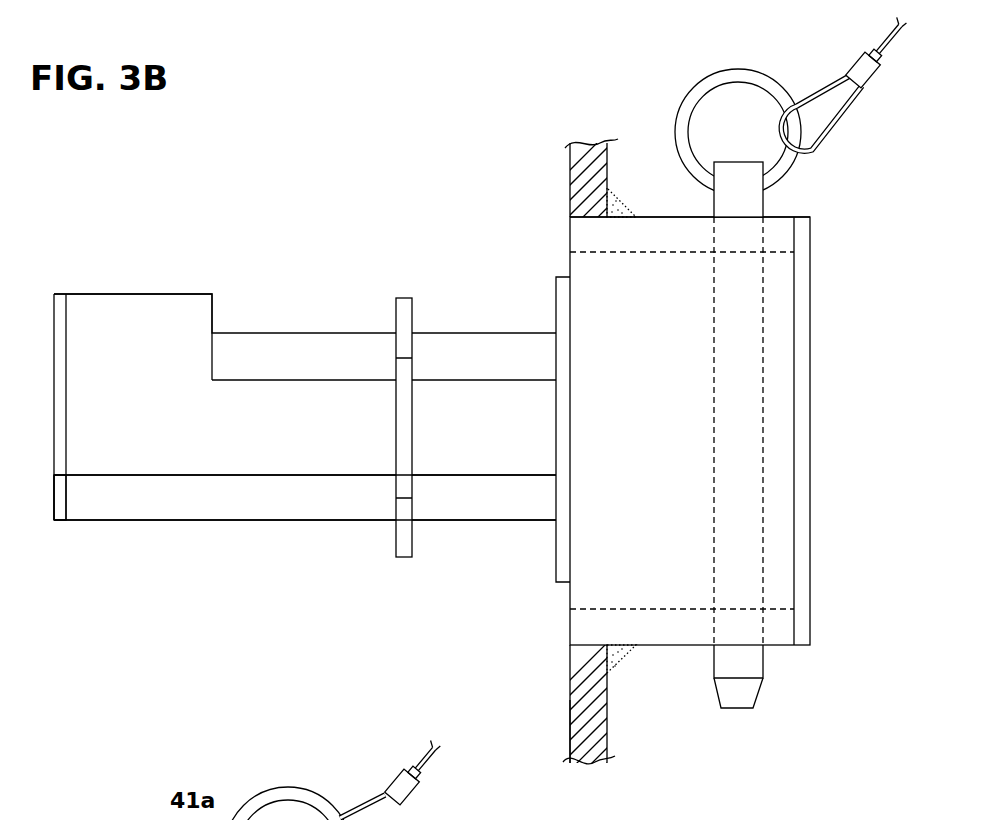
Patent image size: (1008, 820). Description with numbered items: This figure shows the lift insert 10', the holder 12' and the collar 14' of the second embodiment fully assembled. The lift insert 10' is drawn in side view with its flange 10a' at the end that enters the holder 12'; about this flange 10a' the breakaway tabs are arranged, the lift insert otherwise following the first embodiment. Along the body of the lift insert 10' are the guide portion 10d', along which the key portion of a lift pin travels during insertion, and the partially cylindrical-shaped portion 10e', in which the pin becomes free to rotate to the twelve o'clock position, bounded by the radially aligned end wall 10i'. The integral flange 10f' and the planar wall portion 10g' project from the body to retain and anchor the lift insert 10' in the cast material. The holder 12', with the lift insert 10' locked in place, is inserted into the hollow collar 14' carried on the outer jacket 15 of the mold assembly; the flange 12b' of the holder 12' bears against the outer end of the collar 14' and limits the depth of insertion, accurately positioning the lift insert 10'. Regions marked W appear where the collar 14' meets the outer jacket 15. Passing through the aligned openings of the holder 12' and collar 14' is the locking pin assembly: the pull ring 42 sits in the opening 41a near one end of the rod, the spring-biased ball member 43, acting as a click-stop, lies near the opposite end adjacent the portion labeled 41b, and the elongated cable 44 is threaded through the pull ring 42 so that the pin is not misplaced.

The lift insert 10' is at (305, 300).
The flange 10a' is at (515, 371).
The guide portion 10d' is at (305, 529).
The partially cylindrical-shaped portion 10e' is at (133, 259).
The integral flange 10f' is at (361, 408).
The planar wall portion 10g' is at (247, 298).
The radially aligned end wall 10i' is at (91, 539).
The holder 12' is at (731, 431).
The flange 12b' is at (842, 431).
The collar 14' is at (690, 134).
The outer jacket 15 is at (607, 722).
The weld W is at (637, 198).
The opening 41a is at (743, 173).
The lower locking pin 41b is at (740, 696).
The pull ring 42 is at (718, 78).
The spring-biased ball member 43 is at (763, 664).
The elongated cable 44 is at (838, 83).